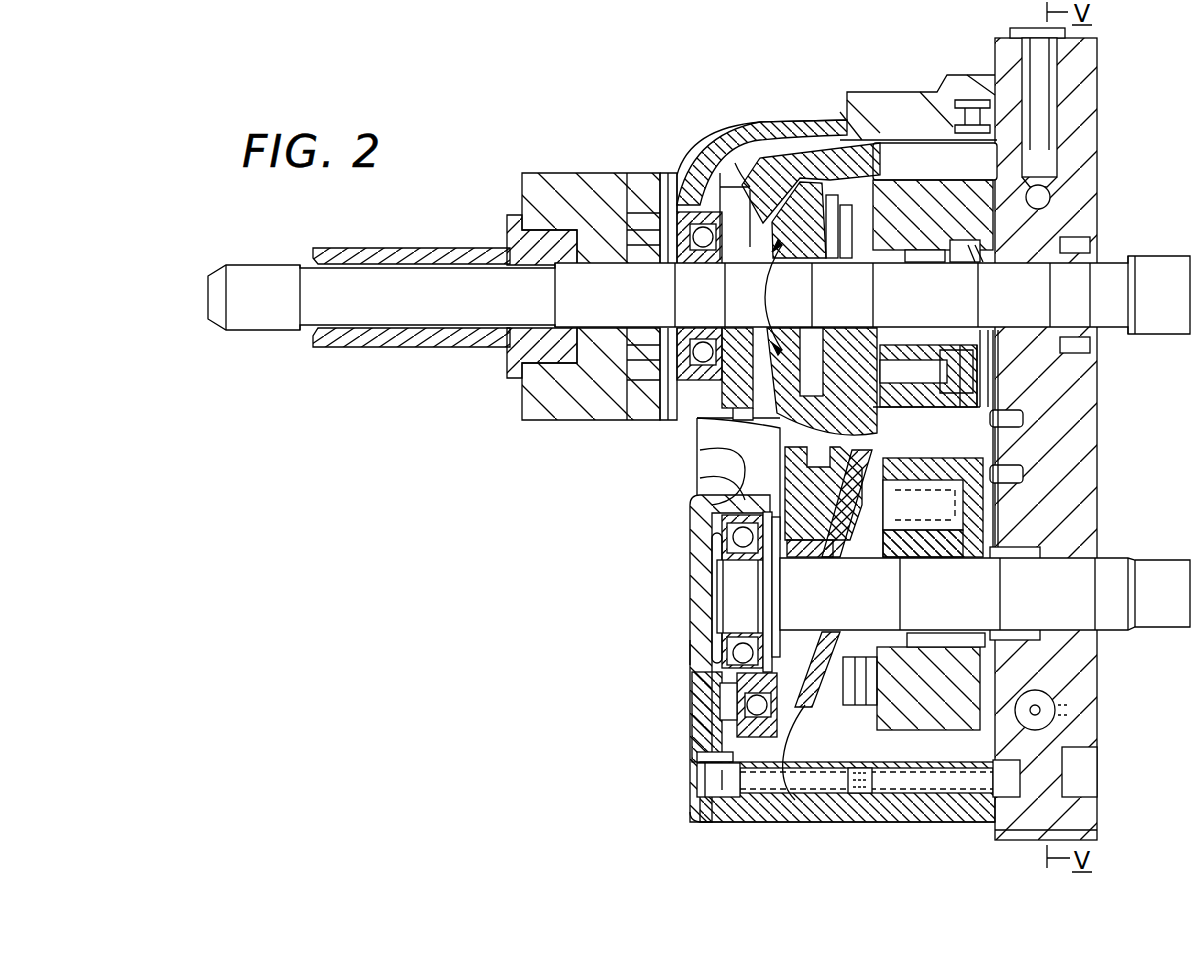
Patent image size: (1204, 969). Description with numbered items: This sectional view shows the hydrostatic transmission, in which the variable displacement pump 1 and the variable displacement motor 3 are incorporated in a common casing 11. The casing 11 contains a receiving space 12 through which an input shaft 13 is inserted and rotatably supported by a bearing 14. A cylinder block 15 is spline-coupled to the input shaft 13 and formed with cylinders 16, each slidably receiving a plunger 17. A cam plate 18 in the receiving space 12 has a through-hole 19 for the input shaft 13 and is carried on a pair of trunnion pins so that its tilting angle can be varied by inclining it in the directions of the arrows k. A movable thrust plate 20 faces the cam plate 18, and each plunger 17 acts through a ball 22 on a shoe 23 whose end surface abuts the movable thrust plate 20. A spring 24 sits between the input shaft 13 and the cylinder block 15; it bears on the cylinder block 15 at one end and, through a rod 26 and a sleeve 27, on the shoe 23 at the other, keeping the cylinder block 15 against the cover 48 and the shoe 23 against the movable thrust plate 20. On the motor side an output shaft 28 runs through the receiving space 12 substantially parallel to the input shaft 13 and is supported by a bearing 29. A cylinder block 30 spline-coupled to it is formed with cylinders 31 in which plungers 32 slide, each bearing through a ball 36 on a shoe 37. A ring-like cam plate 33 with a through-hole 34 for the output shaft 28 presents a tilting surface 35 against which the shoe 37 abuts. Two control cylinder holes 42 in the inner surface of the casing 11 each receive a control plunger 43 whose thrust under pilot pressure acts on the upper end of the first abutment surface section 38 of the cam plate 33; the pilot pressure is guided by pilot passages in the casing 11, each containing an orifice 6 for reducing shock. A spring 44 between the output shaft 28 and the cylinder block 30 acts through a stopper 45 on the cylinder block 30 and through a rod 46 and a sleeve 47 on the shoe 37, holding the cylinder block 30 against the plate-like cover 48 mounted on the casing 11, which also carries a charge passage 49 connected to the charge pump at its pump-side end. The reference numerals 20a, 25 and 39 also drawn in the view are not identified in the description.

The variable displacement pump 1 is at (658, 102).
The variable displacement motor 3 is at (674, 808).
The orifice 6 is at (850, 792).
The casing 11 is at (682, 215).
The receiving space 12 is at (727, 425).
The input shaft 13 is at (1033, 290).
The bearing 14 is at (597, 192).
The cylinder block 15 is at (933, 197).
The cylinders 16 is at (950, 393).
The plunger 17 is at (922, 358).
The cam plate 18 is at (777, 175).
The through-hole 19 is at (692, 192).
The movable thrust plate 20 is at (793, 180).
The ring gear 20a is at (773, 190).
The ball 22 is at (840, 347).
The shoe 23 is at (833, 190).
The spring 24 is at (982, 250).
The snap ring 25 is at (978, 252).
The rod 26 is at (873, 253).
The sleeve 27 is at (873, 183).
The output shaft 28 is at (1098, 573).
The bearing 29 is at (690, 655).
The cylinder block 30 is at (997, 680).
The cylinders 31 is at (937, 490).
The plunger 32 is at (897, 523).
The cam plate 33 is at (695, 500).
The through-hole 34 is at (817, 553).
The tilting surface 35 is at (737, 817).
The ball 36 is at (827, 690).
The shoe 37 is at (800, 800).
The first abutment surface section 38 is at (702, 755).
The housing flange 39 is at (743, 457).
The control cylinder hole 42 is at (737, 718).
The control plunger 43 is at (717, 683).
The spring 44 is at (930, 643).
The stopper 45 is at (990, 627).
The rod 46 is at (897, 707).
The sleeve 47 is at (857, 657).
The cover 48 is at (1090, 157).
The charge passage 49 is at (1050, 137).